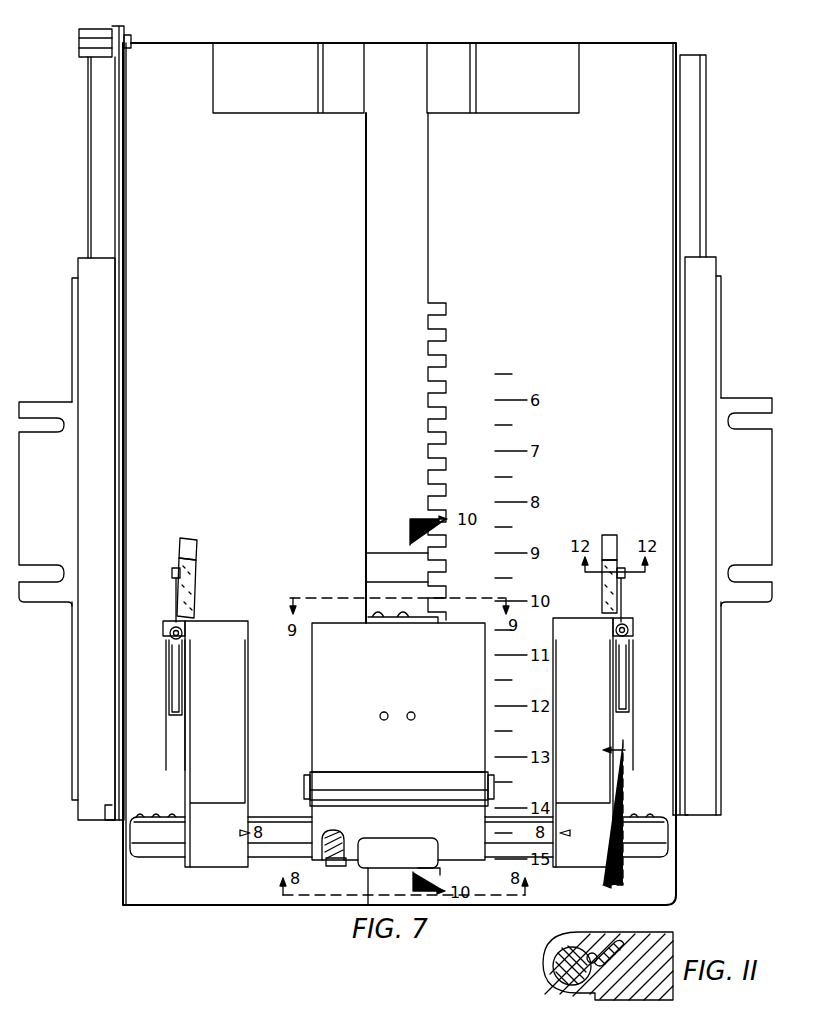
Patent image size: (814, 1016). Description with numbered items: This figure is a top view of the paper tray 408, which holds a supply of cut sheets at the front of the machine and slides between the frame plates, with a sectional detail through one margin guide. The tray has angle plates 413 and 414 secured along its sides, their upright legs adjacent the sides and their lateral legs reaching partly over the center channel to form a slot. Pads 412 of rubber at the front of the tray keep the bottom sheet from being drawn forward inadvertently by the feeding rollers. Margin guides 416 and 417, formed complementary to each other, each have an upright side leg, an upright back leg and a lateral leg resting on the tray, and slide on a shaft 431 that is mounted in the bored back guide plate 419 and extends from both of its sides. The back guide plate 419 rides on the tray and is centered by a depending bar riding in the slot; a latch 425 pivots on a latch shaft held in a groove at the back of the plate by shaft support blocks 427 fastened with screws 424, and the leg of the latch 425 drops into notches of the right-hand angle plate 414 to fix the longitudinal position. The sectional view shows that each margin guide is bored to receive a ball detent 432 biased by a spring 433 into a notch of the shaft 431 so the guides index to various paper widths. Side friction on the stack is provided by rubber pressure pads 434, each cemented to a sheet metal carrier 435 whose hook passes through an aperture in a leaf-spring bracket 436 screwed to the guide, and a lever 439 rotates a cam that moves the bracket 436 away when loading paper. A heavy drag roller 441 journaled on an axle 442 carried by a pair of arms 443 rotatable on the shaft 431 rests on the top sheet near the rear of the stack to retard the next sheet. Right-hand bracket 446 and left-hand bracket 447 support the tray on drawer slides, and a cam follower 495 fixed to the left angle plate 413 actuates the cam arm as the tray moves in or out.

In FIG. 7, the paper tray 408 is at (764, 247).
In FIG. 7, the pads 412 is at (263, 45).
In FIG. 7, the angle plate 413 is at (366, 130).
In FIG. 7, the angle plate 414 is at (434, 153).
In FIG. 7, the margin guide 416 is at (222, 620).
In FIG. 7, the margin guide 417 is at (572, 622).
In FIG. 11, the margin guide 417 is at (676, 938).
In FIG. 7, the back guide plate 419 is at (318, 697).
In FIG. 7, the screws 424 is at (322, 862).
In FIG. 7, the latch 425 is at (389, 846).
In FIG. 7, the shaft support blocks 427 is at (336, 866).
In FIG. 7, the shaft 431 is at (290, 826).
In FIG. 11, the shaft 431 is at (560, 952).
In FIG. 11, the detent 432 is at (591, 952).
In FIG. 11, the spring 433 is at (616, 944).
In FIG. 7, the pressure pads 434 is at (197, 556).
In FIG. 7, the sheet metal carrier 435 is at (181, 548).
In FIG. 7, the bracket 436 is at (174, 604).
In FIG. 7, the lever 439 is at (175, 700).
In FIG. 7, the drag roller 441 is at (356, 774).
In FIG. 7, the axle 442 is at (304, 775).
In FIG. 7, the arm 443 is at (306, 804).
In FIG. 7, the right-hand bracket 446 is at (744, 408).
In FIG. 7, the left-hand bracket 447 is at (60, 407).
In FIG. 7, the cam follower 495 is at (98, 28).